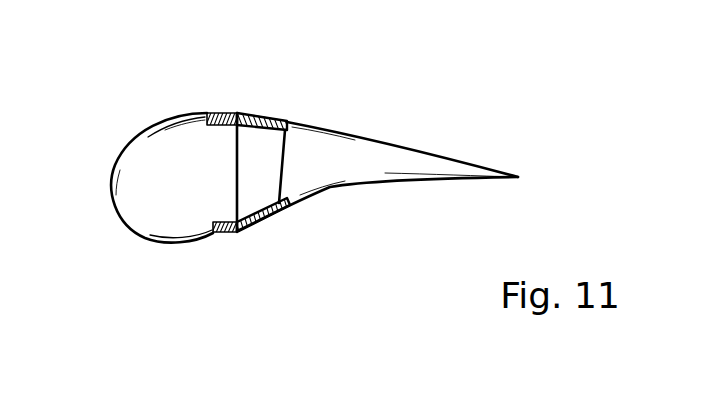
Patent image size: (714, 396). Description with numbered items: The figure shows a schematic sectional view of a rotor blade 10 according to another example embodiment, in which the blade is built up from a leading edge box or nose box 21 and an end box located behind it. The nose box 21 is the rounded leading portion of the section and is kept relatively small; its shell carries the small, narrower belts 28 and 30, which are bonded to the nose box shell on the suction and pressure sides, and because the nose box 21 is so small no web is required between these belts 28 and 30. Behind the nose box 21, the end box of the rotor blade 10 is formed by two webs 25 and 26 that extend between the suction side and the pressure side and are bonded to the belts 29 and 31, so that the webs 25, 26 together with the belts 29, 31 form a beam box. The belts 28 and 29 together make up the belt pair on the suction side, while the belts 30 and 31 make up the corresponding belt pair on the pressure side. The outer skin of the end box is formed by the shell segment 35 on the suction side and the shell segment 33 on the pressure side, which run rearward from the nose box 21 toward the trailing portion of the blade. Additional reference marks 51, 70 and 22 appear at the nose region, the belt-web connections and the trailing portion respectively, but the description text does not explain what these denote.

The rotor blade 10 is at (170, 83).
The nose box 21 is at (160, 143).
The nose skin 51 is at (133, 232).
The belt 28 is at (228, 112).
The laminated reinforcement 70 is at (236, 112).
The belt 29 is at (262, 114).
The web 25 is at (238, 160).
The web 26 is at (283, 163).
The shell segment 35 is at (383, 143).
The trailing edge 22 is at (413, 170).
The shell segment 33 is at (383, 184).
The belt 30 is at (225, 235).
The belt 31 is at (282, 210).